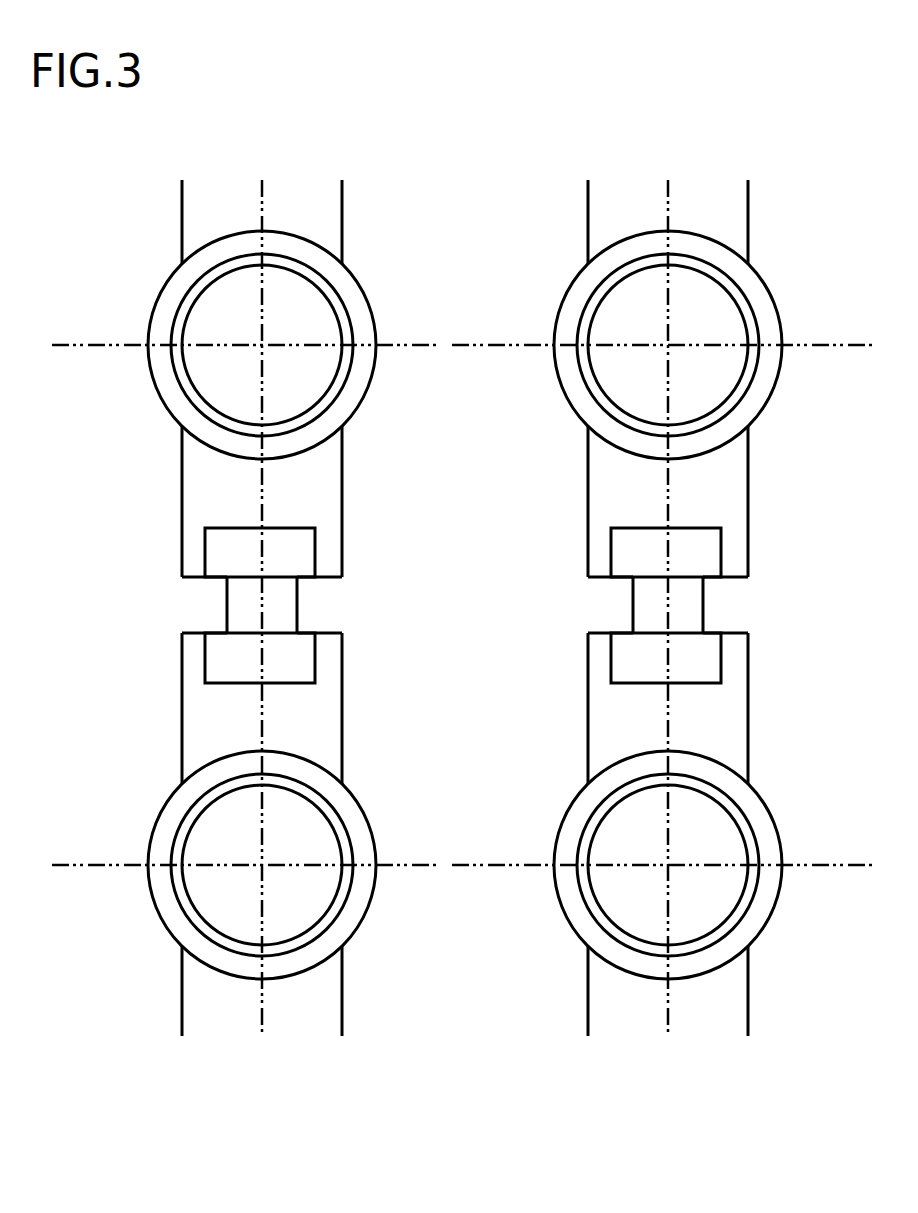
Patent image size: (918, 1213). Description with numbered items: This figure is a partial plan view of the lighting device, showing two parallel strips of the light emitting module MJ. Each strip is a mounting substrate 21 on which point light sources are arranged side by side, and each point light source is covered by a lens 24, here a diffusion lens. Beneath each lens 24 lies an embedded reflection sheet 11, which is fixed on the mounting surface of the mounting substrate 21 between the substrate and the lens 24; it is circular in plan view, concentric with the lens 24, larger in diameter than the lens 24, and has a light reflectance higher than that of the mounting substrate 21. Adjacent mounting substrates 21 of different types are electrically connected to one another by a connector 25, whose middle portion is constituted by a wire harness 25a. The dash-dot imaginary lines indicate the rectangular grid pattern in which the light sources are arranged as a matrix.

The light emitting module MJ is at (137, 257).
The lens 24 is at (175, 318).
The embedded reflection sheet 11 is at (153, 382).
The mounting substrate 21 is at (182, 478).
The connector 25 is at (205, 550).
The wire harness 25a is at (227, 604).